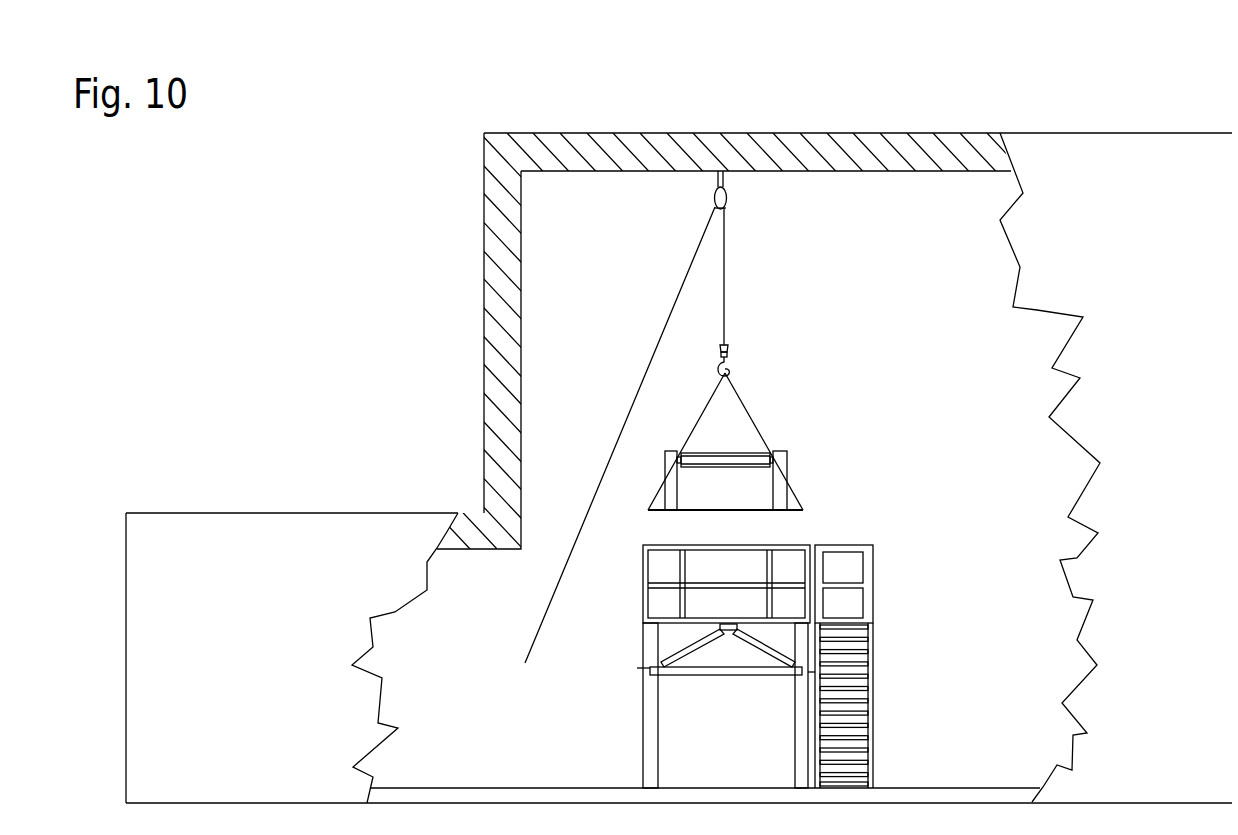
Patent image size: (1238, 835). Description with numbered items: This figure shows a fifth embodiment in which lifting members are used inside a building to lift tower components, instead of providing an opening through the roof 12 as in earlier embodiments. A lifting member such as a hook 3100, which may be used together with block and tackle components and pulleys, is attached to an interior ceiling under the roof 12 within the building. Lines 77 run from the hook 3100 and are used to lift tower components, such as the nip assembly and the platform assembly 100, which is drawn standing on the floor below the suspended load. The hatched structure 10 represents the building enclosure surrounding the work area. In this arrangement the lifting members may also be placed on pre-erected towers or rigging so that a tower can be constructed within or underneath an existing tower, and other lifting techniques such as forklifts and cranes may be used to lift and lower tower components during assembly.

The wall 10 is at (659, 341).
The roof 12 is at (858, 115).
The hook 3100 is at (798, 201).
The lines 77 is at (788, 292).
The platform assembly 100 is at (905, 548).